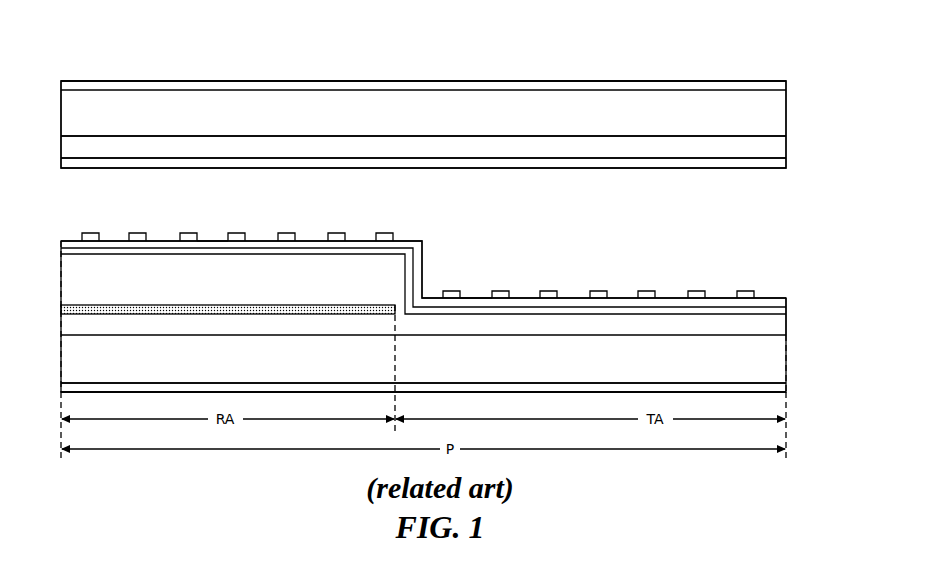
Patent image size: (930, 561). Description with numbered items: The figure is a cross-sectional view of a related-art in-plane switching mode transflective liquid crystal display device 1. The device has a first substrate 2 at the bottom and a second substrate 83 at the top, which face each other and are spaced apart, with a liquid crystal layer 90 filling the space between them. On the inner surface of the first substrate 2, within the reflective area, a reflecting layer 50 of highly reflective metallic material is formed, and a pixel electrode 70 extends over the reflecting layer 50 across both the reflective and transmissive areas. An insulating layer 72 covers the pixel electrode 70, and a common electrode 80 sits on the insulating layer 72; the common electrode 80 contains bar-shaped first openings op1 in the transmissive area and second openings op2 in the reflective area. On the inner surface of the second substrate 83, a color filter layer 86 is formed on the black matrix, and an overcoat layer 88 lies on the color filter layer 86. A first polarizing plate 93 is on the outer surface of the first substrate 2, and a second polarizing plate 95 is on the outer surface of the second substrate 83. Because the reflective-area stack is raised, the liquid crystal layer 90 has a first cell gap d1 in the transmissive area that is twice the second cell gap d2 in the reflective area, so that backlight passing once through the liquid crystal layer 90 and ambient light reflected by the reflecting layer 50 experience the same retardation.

The in-plane switching mode transflective liquid crystal display device 1 is at (707, 56).
The first substrate 2 is at (423, 316).
The reflecting layer 50 is at (268, 314).
The pixel electrode 70 is at (624, 309).
The insulating layer 72 is at (672, 300).
The common electrode 80 is at (137, 232).
The second substrate 83 is at (423, 124).
The color filter layer 86 is at (455, 147).
The overcoat layer 88 is at (529, 162).
The liquid crystal layer 90 is at (759, 218).
The first polarizing plate 93 is at (513, 391).
The second polarizing plate 95 is at (469, 84).
The first openings op1 is at (481, 288).
The second openings op2 is at (210, 236).
The first cell gap d1 is at (622, 169).
The second cell gap d2 is at (315, 240).